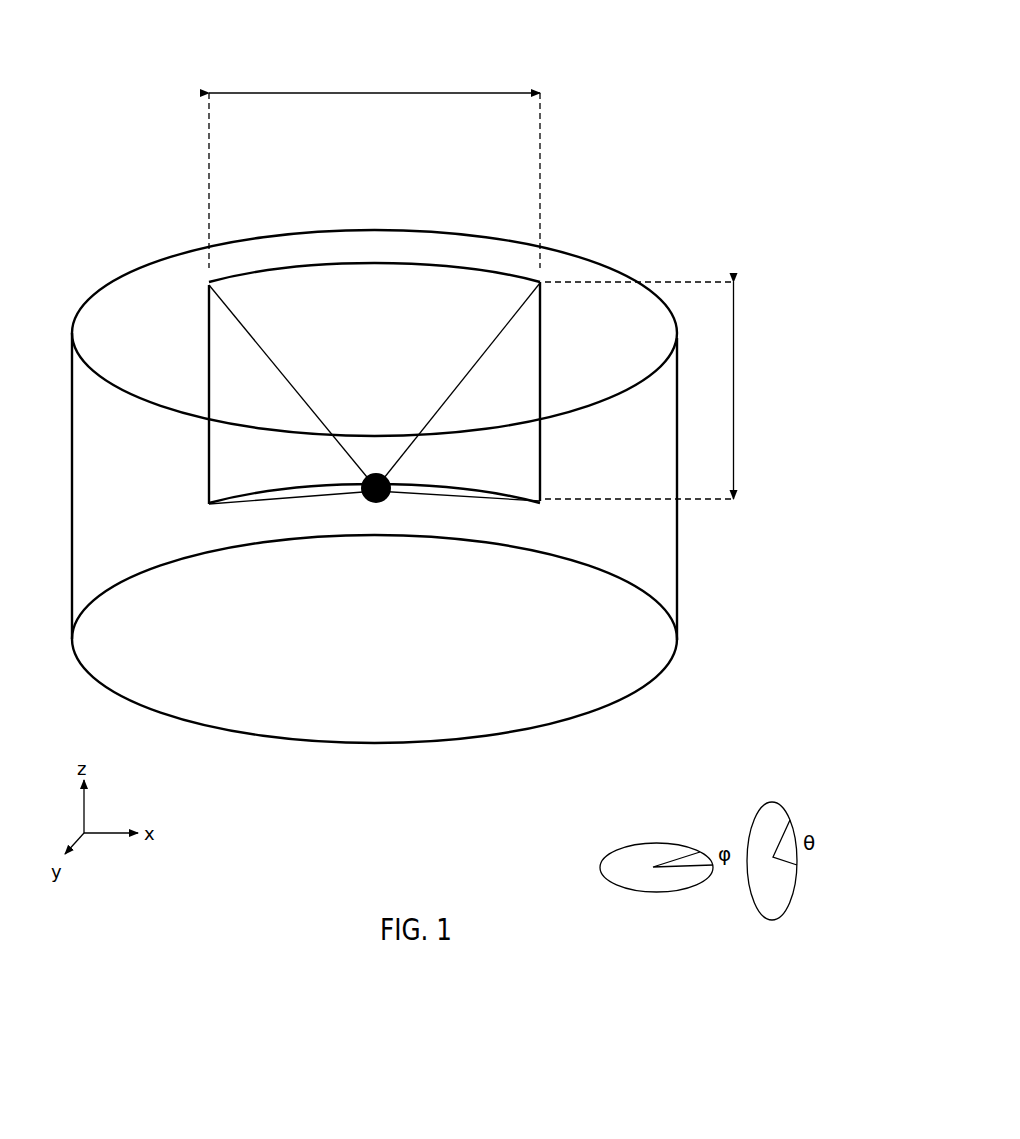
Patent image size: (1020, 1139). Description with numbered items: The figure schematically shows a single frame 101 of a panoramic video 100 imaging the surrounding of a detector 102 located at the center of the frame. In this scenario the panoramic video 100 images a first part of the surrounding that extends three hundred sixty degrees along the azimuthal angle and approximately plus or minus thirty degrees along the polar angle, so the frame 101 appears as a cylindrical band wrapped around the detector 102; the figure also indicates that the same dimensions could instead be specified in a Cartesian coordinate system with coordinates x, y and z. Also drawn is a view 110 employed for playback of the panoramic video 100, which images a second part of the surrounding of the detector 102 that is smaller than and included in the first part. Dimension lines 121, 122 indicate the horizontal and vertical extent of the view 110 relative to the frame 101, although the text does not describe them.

The panoramic video 100 is at (688, 134).
The single frame 101 is at (663, 672).
The detector 102 is at (392, 478).
The view 110 is at (209, 320).
The screen width 121 is at (390, 93).
The screen height 122 is at (734, 365).